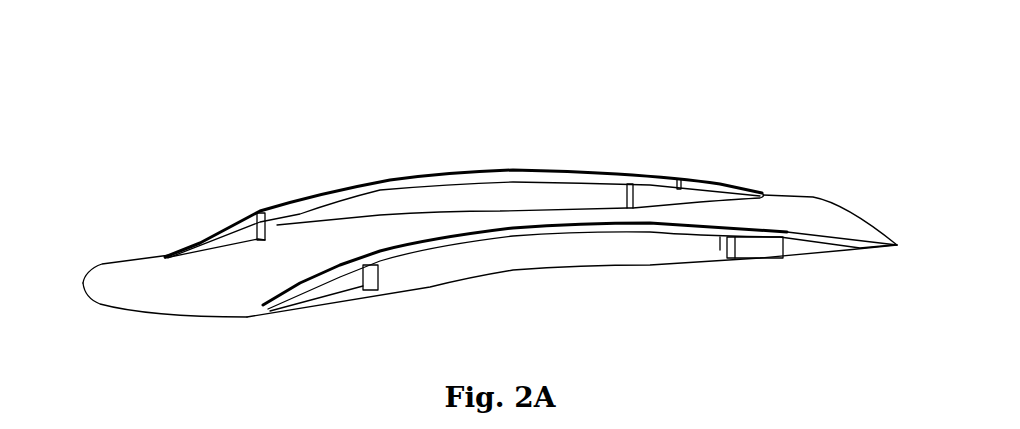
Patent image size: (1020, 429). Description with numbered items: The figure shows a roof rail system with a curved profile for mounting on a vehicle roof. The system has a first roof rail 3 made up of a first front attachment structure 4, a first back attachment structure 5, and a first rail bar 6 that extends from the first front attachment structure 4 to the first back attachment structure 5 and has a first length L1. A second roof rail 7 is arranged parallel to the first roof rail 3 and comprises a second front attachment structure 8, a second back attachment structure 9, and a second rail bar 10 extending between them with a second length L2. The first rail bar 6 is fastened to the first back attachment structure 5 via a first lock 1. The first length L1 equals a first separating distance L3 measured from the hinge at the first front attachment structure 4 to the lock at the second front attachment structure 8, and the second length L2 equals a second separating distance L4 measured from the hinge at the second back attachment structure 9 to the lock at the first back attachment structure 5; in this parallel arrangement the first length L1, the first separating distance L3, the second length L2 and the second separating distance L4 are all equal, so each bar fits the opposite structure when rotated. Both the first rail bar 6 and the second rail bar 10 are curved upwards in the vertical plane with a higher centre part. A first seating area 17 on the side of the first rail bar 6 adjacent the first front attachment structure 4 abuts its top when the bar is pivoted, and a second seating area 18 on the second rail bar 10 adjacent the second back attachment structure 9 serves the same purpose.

The first lock 1 is at (130, 115).
The first roof rail 3 is at (846, 266).
The first front attachment structure 4 is at (347, 286).
The first back attachment structure 5 is at (765, 245).
The first rail bar 6 is at (636, 232).
The second roof rail 7 is at (502, 152).
The second front attachment structure 8 is at (250, 232).
The second back attachment structure 9 is at (657, 188).
The second rail bar 10 is at (393, 181).
The first seating area 17 is at (362, 263).
The second seating area 18 is at (633, 173).
The first length L1 is at (385, 276).
The second length L2 is at (280, 225).
The first separating distance L3 is at (158, 269).
The second separating distance L4 is at (781, 199).